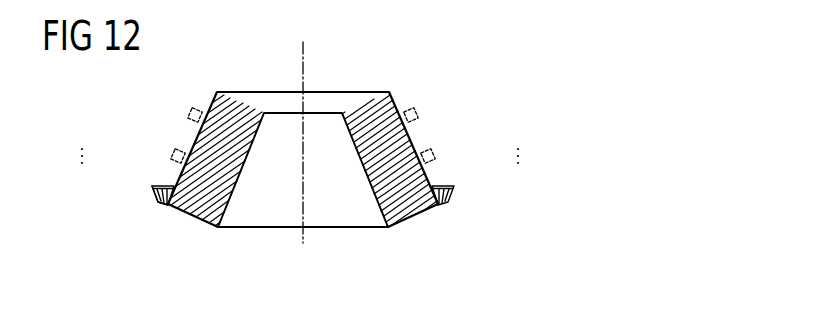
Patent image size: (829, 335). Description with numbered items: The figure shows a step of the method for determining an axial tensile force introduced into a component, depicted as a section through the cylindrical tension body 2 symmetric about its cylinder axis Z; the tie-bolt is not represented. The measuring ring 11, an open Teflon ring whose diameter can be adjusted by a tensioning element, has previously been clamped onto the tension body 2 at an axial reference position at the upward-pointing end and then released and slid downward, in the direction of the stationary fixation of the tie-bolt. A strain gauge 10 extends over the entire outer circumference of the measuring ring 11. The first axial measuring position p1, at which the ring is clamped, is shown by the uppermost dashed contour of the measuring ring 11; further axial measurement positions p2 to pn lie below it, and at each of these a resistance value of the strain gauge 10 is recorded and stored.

The tension body 2 is at (415, 206).
The strain gauge 10 is at (152, 196).
The measuring ring 11 is at (151, 200).
The cylinder axis Z is at (303, 58).
The first axial measuring position p1 is at (473, 78).
The second axial measuring position p2 is at (485, 121).
The n-th axial measuring position pn is at (522, 194).